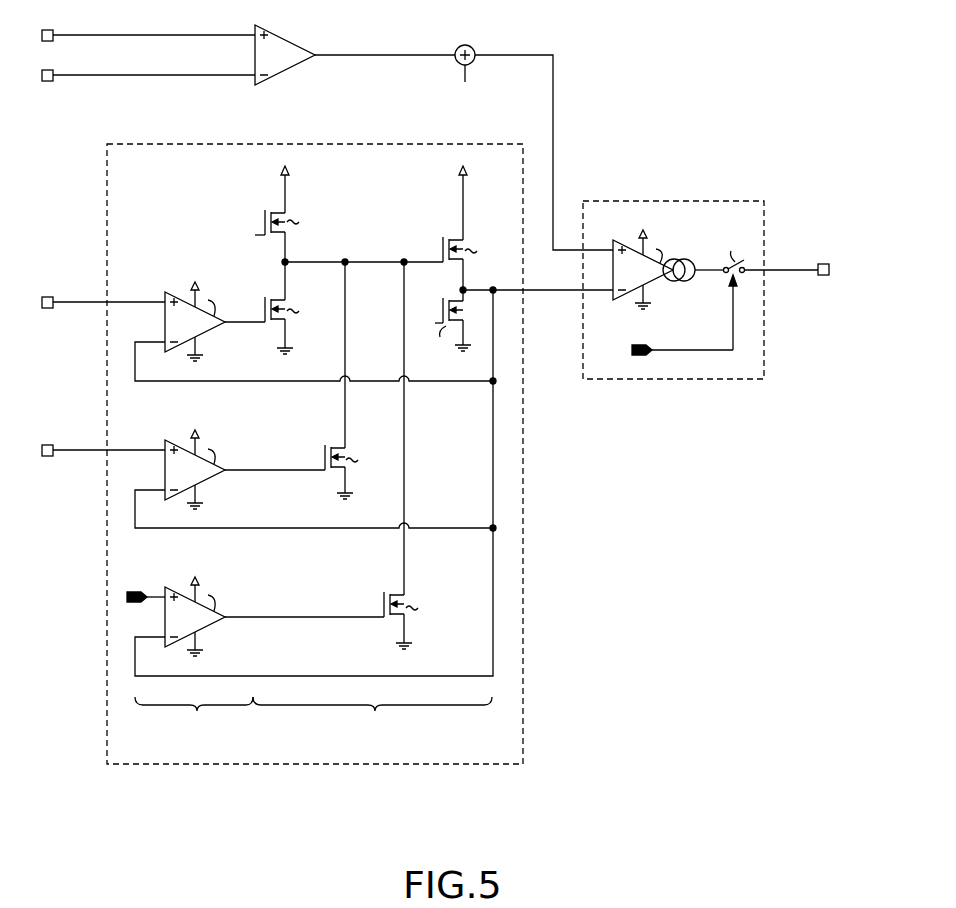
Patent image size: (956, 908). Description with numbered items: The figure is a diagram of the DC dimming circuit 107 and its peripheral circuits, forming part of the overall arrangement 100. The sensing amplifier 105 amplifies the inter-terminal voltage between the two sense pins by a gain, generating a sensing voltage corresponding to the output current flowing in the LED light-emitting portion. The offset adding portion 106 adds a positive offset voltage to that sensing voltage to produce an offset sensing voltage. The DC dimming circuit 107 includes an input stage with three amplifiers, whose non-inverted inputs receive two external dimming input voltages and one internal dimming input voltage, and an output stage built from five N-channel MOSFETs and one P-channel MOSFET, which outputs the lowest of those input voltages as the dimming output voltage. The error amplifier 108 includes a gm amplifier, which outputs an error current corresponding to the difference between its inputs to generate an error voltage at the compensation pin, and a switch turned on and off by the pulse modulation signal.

The LED driver circuit 100 is at (802, 29).
The sensing amplifier 105 is at (289, 41).
The offset adding portion 106 is at (464, 45).
The DC dimming circuit 107 is at (318, 144).
The error amplifier 108 is at (677, 201).